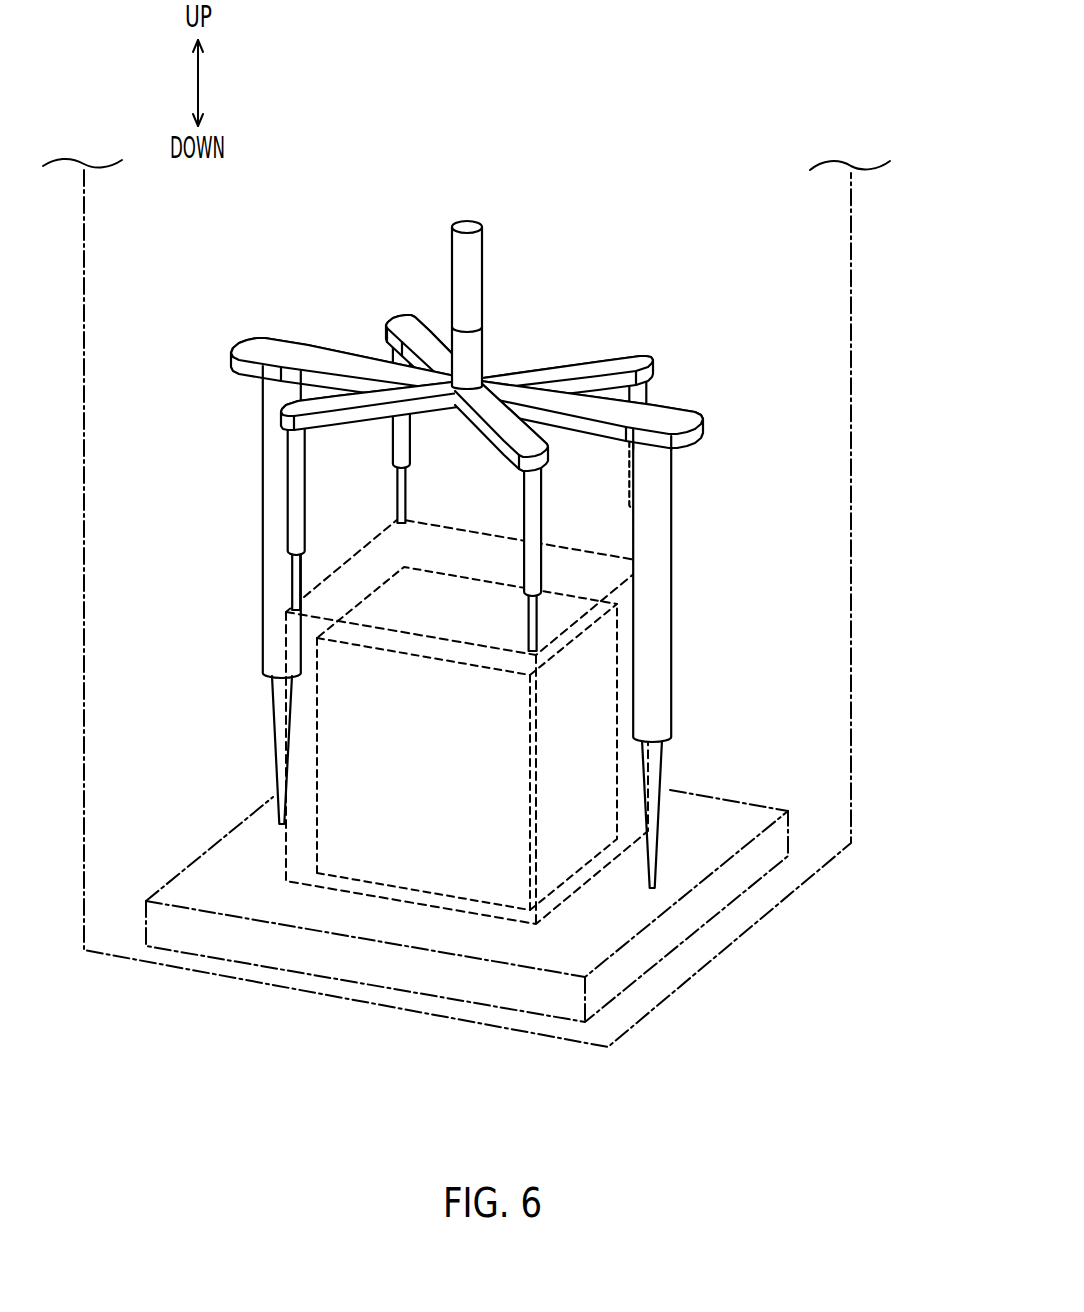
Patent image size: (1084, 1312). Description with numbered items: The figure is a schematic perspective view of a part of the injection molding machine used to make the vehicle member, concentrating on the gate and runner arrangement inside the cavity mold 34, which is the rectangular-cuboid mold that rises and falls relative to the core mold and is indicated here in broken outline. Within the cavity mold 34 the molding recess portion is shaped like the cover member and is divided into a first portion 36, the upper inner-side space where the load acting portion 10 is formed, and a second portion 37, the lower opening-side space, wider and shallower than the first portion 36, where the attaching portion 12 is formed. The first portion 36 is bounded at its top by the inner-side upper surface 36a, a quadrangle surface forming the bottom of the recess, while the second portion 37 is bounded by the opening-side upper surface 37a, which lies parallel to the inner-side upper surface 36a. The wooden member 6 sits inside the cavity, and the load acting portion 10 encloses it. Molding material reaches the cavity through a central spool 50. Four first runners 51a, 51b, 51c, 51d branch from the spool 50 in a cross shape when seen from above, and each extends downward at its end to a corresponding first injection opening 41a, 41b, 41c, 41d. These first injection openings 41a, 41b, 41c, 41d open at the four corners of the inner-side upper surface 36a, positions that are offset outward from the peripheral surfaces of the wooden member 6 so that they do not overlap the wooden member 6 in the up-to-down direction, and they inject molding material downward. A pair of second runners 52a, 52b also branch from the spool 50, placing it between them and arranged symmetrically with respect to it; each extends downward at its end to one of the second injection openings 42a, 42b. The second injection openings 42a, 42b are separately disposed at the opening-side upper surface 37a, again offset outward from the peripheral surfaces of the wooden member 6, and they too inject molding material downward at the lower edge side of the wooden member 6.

The wooden member 6 is at (375, 843).
The load acting portion 10 is at (597, 707).
The attaching portion 12 is at (703, 813).
The cavity mold 34 is at (855, 477).
The first portion 36 is at (485, 877).
The inner-side upper surface 36a is at (442, 604).
The second portion 37 is at (383, 963).
The opening-side upper surface 37a is at (256, 894).
The first injection opening 41a is at (290, 580).
The first injection opening 41b is at (524, 646).
The first injection opening 41c is at (399, 480).
The first injection opening 41d is at (645, 535).
The second injection opening 42a is at (275, 771).
The second injection opening 42b is at (656, 860).
The spool 50 is at (470, 272).
The first runner 51a is at (288, 410).
The first runner 51b is at (506, 428).
The first runner 51c is at (412, 325).
The first runner 51d is at (603, 363).
The second runner 52a is at (320, 356).
The second runner 52b is at (680, 420).